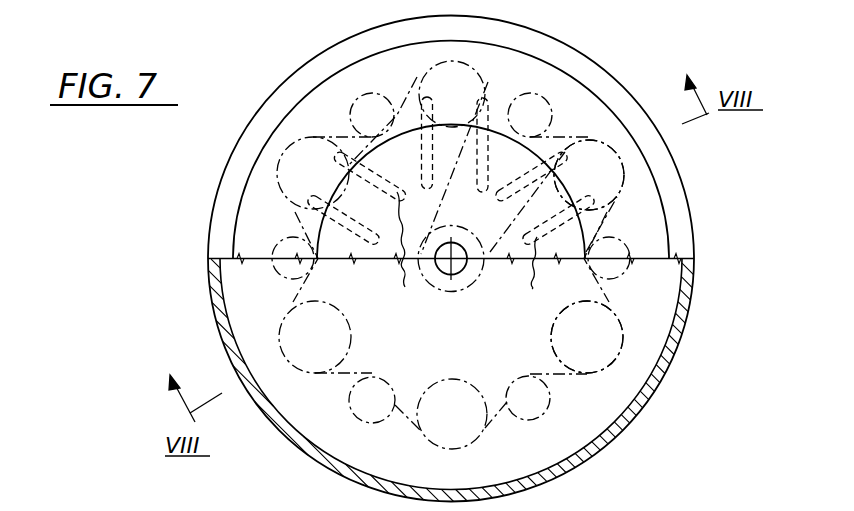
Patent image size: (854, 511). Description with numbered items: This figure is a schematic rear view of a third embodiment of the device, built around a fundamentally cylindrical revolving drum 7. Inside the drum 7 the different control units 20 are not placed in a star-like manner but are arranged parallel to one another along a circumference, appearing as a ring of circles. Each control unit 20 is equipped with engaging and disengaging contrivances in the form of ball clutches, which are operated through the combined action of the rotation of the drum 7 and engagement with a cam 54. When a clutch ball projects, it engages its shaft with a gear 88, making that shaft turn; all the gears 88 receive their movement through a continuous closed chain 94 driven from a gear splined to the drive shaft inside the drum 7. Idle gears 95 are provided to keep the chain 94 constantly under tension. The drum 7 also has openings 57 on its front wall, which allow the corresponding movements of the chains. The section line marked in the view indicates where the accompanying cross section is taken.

The revolving drum 7 is at (203, 233).
The control unit 20 is at (423, 73).
The cam 54 is at (247, 202).
The opening 57 is at (378, 245).
The gear 88 is at (593, 139).
The continuous closed chain 94 is at (568, 374).
The idle gear 95 is at (270, 267).